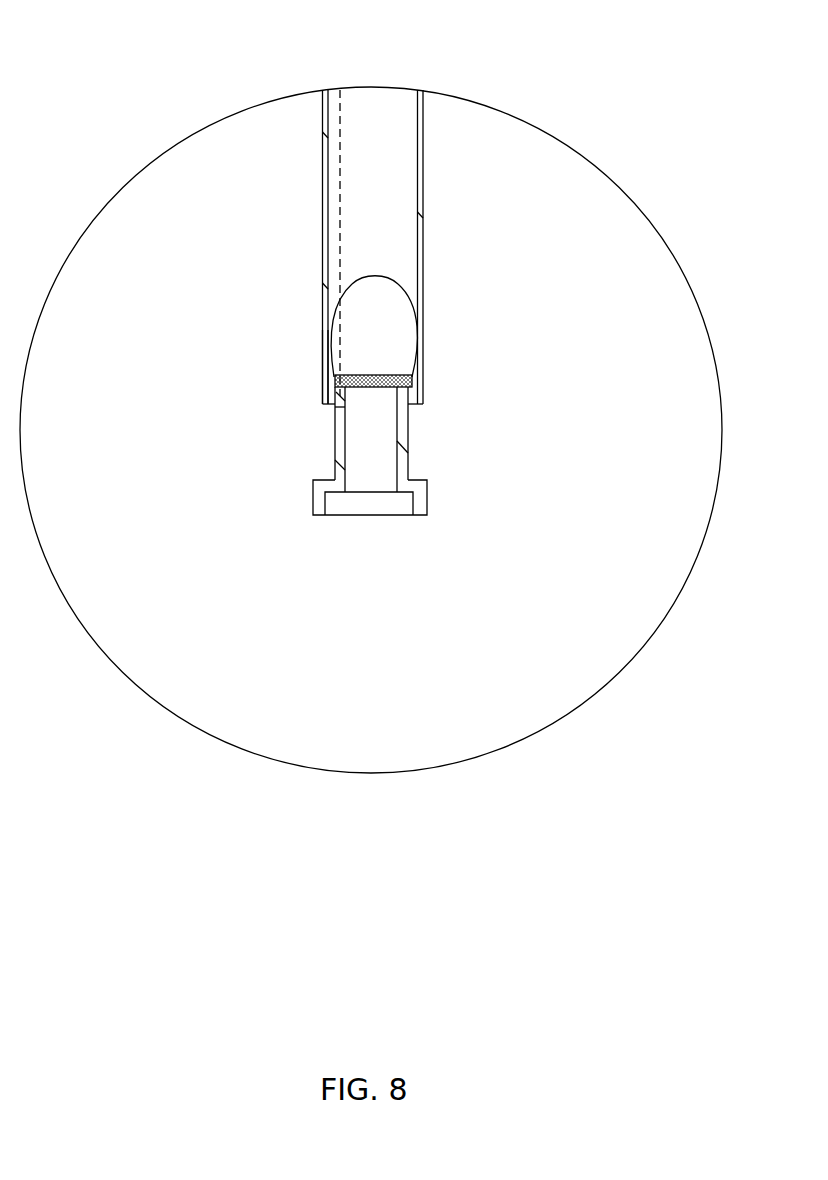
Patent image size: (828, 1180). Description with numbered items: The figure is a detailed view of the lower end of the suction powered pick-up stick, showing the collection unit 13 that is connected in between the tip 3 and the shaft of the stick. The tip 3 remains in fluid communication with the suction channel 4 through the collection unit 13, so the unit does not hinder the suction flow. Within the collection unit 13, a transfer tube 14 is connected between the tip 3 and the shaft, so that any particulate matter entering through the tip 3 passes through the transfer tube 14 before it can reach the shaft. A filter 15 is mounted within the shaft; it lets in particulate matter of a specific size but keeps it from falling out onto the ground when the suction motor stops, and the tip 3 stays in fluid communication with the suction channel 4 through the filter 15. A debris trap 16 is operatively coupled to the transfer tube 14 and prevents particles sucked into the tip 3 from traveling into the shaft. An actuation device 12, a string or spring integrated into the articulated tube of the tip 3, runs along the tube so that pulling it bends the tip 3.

The tip 3 is at (457, 485).
The suction channel 4 is at (395, 130).
The actuation device 12 is at (340, 178).
The collection unit 13 is at (315, 371).
The transfer tube 14 is at (380, 463).
The filter 15 is at (410, 378).
The debris trap 16 is at (410, 297).